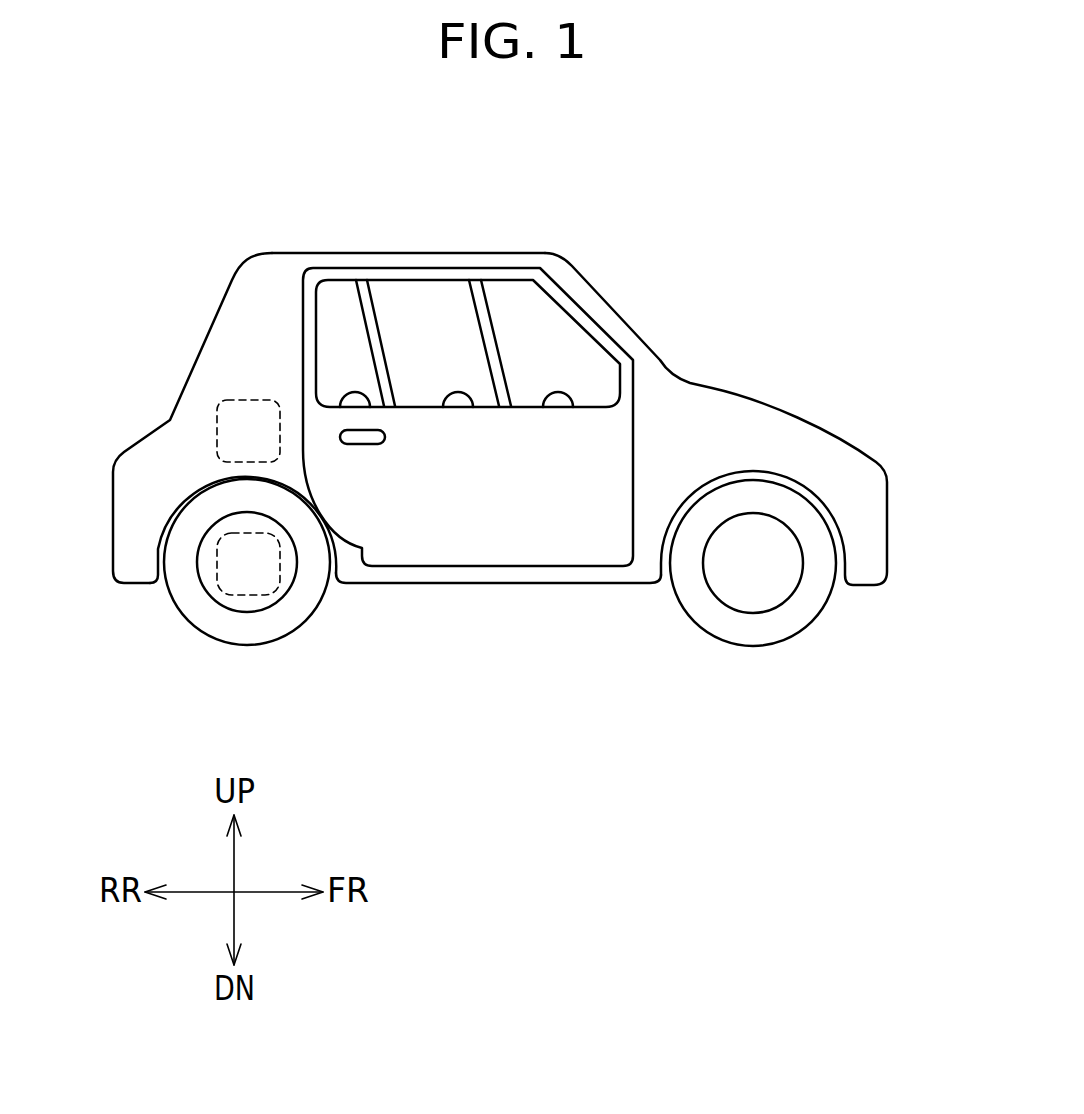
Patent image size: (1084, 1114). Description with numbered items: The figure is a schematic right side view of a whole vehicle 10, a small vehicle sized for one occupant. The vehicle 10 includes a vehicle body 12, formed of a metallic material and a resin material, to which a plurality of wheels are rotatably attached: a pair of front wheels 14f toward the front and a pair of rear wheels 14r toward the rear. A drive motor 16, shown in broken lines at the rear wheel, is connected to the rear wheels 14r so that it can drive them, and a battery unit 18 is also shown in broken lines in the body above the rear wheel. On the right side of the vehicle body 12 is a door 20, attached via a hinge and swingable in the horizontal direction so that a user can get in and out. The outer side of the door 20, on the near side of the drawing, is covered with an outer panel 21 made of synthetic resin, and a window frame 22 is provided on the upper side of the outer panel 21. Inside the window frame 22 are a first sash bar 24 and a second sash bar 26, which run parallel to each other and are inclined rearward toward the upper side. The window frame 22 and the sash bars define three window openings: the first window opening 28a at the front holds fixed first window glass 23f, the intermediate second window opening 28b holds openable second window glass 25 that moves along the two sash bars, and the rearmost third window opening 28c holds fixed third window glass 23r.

The vehicle 10 is at (759, 222).
The vehicle body 12 is at (258, 268).
The rear wheels 14r is at (177, 550).
The front wheels 14f is at (822, 552).
The drive motor 16 is at (237, 530).
The battery unit 18 is at (248, 400).
The door 20 is at (619, 574).
The outer panel 21 is at (515, 542).
The window frame 22 is at (313, 282).
The third window glass 23r is at (335, 297).
The first window glass 23f is at (548, 322).
The first sash bar 24 is at (498, 330).
The second window glass 25 is at (415, 295).
The second sash bar 26 is at (383, 328).
The first window opening 28a is at (544, 408).
The second window opening 28b is at (444, 408).
The third window opening 28c is at (341, 408).